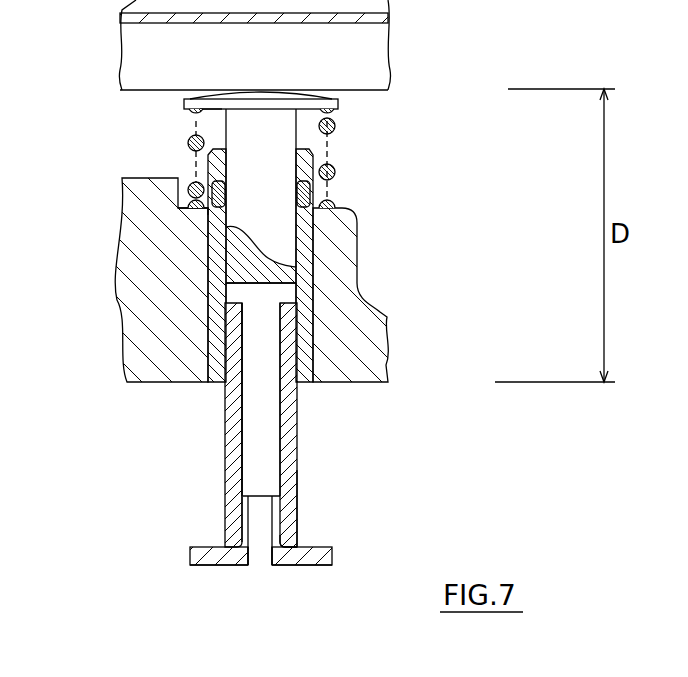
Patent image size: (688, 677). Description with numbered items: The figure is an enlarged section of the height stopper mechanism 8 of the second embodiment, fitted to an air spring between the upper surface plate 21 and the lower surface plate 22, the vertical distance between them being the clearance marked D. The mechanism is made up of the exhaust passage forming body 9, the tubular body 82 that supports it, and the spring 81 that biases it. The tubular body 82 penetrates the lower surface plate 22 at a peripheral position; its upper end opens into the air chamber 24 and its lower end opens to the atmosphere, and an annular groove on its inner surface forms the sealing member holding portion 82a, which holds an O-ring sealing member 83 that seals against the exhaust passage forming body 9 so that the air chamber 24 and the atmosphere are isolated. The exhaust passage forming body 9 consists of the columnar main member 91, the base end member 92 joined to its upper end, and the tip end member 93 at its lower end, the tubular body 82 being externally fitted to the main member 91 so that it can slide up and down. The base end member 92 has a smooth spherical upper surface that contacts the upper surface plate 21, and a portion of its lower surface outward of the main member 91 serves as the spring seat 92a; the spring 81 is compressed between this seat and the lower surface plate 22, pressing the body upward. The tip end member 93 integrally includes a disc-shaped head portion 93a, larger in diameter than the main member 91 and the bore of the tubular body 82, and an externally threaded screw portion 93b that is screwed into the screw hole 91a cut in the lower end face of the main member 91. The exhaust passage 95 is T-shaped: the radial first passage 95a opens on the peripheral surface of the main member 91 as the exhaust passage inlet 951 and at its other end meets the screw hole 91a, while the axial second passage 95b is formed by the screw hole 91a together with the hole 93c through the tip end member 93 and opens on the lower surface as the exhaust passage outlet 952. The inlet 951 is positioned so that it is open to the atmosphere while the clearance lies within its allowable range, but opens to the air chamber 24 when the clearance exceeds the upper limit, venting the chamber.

The upper surface plate 21 is at (124, 0).
The lower surface plate 22 is at (138, 177).
The air chamber 24 is at (183, 160).
The height stopper mechanism 8 is at (385, 222).
The spring 81 is at (334, 127).
The tubular body 82 is at (313, 257).
The sealing member holding portion 82a is at (213, 213).
The sealing member 83 is at (312, 190).
The exhaust passage forming body 9 is at (304, 503).
The main member 91 is at (297, 457).
The screw hole 91a is at (245, 416).
The base end member 92 is at (340, 104).
The spring seat 92a is at (208, 112).
The tip end member 93 is at (192, 552).
The head portion 93a is at (205, 566).
The screw portion 93b is at (282, 520).
The hole 93c is at (255, 566).
The exhaust passage 95 is at (248, 455).
The first passage 95a is at (297, 293).
The second passage 95b is at (255, 465).
The exhaust passage inlet 951 is at (225, 287).
The exhaust passage outlet 952 is at (265, 566).